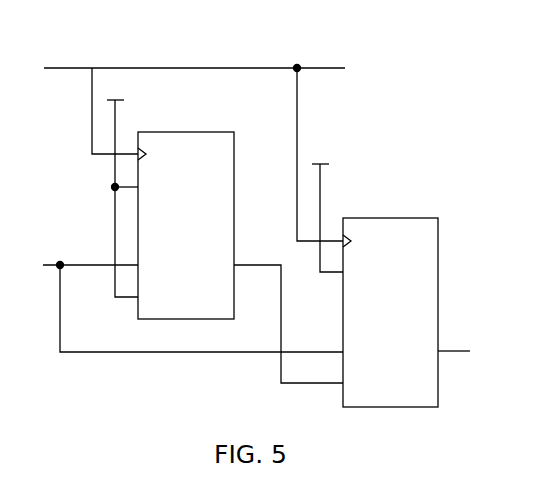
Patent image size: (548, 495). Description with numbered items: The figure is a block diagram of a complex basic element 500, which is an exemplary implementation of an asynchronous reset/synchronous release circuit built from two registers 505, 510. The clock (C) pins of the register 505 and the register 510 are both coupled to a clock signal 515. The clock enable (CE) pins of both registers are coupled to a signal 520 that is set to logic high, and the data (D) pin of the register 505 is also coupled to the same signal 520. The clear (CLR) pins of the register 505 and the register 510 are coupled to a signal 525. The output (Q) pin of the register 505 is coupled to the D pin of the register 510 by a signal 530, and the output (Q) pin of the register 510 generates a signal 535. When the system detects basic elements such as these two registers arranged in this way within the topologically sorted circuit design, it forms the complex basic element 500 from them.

The complex basic element 500 is at (270, 30).
The register 505 is at (163, 193).
The register 510 is at (366, 236).
The clock signal 515 is at (75, 68).
The signal set to logic high 520 is at (223, 187).
The signal 525 is at (175, 304).
The signal 530 is at (280, 372).
The signal 535 is at (471, 353).